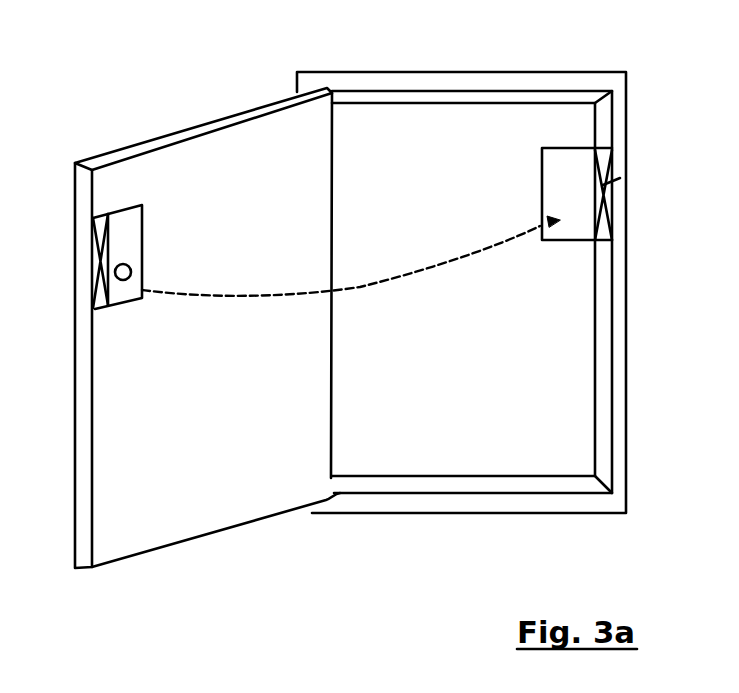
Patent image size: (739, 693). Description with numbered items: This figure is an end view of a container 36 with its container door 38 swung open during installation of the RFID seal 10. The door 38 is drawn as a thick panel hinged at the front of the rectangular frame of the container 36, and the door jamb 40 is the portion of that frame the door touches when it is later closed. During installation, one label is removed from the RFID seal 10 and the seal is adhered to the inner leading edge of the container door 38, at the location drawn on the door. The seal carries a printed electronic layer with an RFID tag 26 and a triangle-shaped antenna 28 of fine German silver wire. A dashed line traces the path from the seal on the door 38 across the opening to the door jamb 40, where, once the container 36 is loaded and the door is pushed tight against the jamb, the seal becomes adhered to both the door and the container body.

The RFID seal 10 is at (326, 299).
The RFID tag 26 is at (127, 291).
The antenna 28 is at (97, 300).
The container 36 is at (560, 76).
The container door 38 is at (167, 532).
The door jamb 40 is at (604, 407).